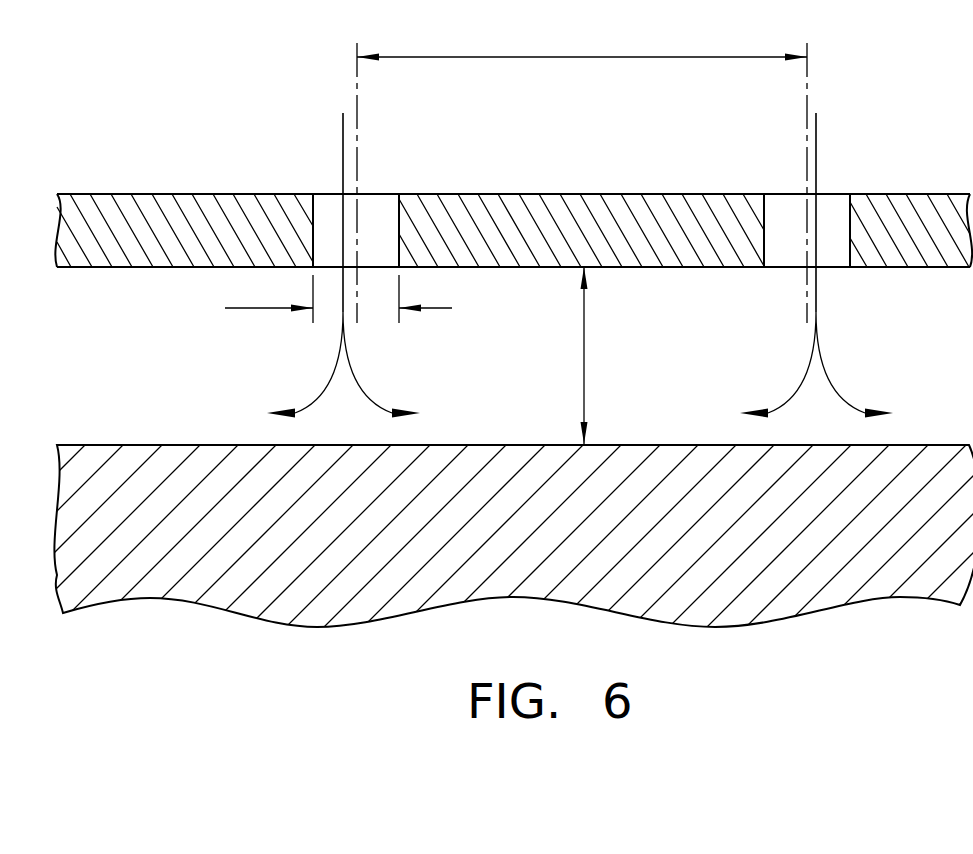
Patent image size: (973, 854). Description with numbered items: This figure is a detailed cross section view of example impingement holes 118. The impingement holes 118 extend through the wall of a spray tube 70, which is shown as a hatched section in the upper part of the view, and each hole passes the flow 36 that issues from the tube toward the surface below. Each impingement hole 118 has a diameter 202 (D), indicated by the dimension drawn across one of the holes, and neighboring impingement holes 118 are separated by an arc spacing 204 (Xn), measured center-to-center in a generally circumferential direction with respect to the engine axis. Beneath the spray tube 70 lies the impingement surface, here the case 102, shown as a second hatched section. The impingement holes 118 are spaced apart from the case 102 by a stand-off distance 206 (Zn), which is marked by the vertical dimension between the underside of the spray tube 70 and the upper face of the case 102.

The fiber 36 is at (343, 135).
The spray tube 70 is at (175, 194).
The case 102 is at (213, 458).
The impingement holes 118 is at (313, 180).
The diameter 202 is at (260, 309).
The arc spacing 204 is at (583, 56).
The stand-off distance 206 is at (585, 357).